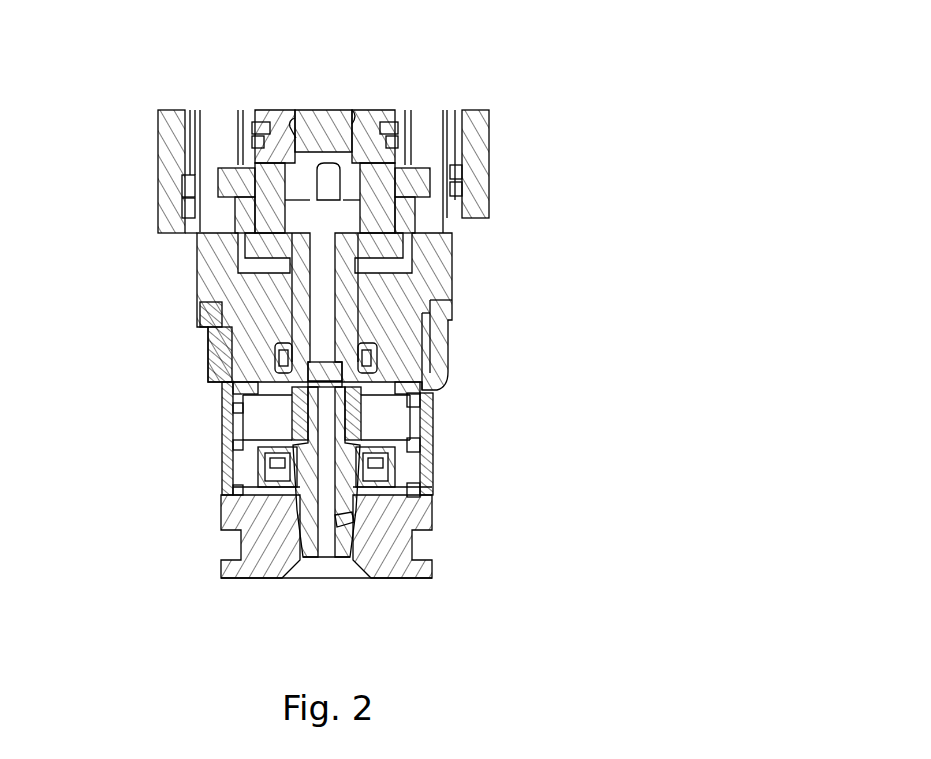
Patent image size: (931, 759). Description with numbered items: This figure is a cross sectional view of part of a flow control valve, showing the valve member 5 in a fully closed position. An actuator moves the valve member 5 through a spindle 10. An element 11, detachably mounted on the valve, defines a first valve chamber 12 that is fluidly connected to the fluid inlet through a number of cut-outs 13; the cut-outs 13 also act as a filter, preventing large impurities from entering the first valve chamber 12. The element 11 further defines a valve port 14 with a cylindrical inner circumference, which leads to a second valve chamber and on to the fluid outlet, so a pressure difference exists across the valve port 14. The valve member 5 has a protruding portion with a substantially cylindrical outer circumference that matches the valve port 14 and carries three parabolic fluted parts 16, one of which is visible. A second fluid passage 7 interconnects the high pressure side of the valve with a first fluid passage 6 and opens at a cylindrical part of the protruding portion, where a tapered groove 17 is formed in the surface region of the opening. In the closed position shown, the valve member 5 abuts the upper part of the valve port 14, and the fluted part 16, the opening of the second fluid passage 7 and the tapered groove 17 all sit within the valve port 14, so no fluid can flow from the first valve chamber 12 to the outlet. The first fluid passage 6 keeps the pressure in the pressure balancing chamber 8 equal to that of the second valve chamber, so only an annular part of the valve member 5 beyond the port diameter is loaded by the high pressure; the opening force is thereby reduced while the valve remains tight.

The valve member 5 is at (348, 460).
The first fluid passage 6 is at (325, 400).
The second fluid passage 7 is at (347, 523).
The pressure balancing chamber 8 is at (328, 210).
The spindle 10 is at (325, 133).
The element 11 is at (225, 410).
The first valve chamber 12 is at (257, 410).
The cut-outs 13 is at (418, 398).
The valve port 14 is at (313, 568).
The fluted parts 16 is at (303, 537).
The tapered groove 17 is at (352, 518).